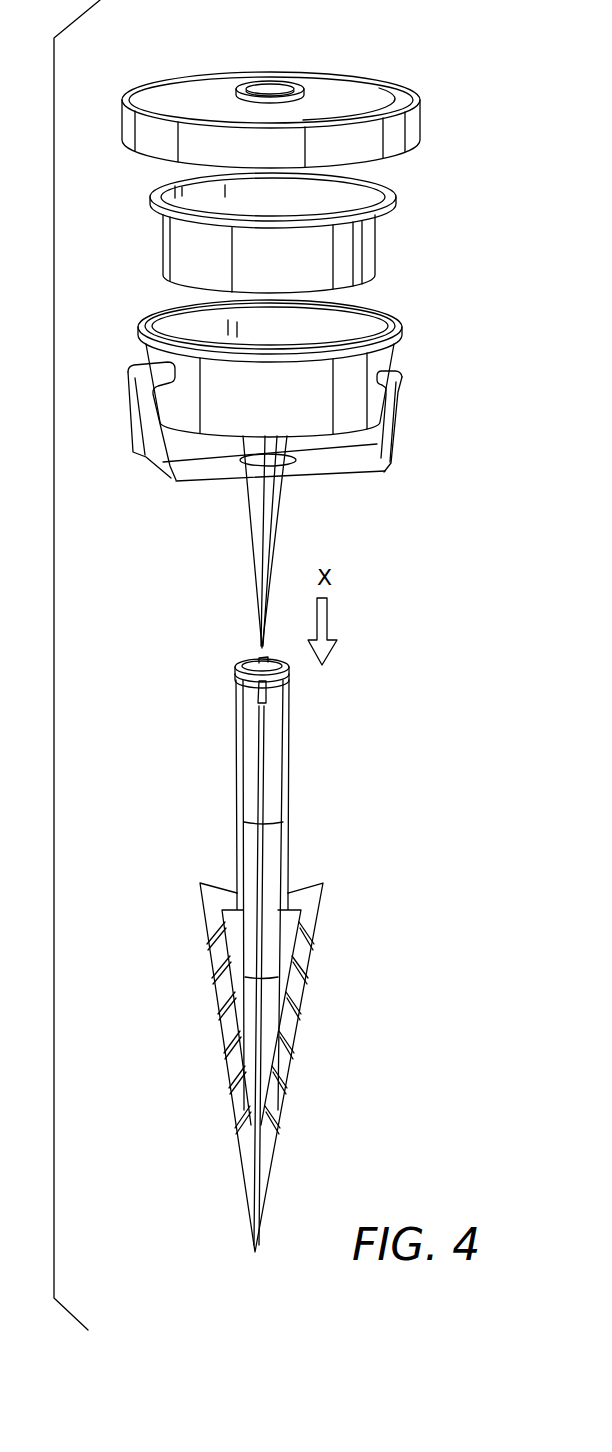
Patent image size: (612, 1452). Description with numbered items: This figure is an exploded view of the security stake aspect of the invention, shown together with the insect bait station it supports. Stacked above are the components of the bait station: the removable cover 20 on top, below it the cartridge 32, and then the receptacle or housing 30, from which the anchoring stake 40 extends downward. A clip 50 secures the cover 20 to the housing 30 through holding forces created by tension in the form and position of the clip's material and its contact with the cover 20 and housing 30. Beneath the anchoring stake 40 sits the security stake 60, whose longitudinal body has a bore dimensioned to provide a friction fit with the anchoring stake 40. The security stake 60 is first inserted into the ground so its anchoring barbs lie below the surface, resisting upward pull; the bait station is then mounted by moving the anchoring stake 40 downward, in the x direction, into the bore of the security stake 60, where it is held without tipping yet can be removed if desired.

The removable cover 20 is at (420, 122).
The cartridge 32 is at (377, 248).
The housing 30 is at (390, 363).
The clip 50 is at (393, 430).
The anchoring stake 40 is at (273, 532).
The security stake 60 is at (307, 852).